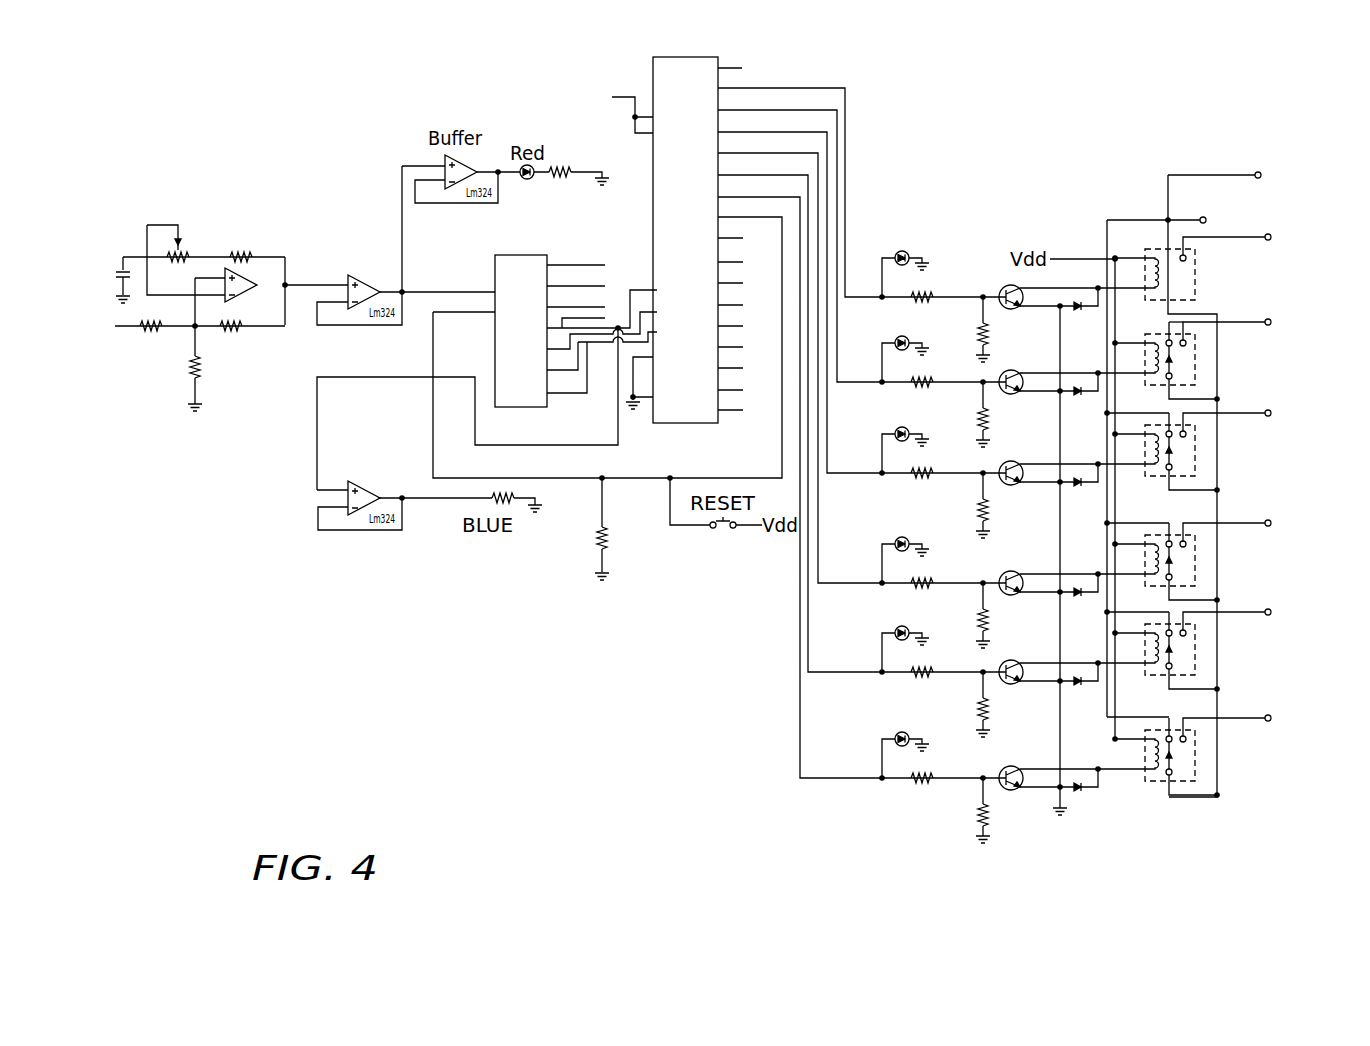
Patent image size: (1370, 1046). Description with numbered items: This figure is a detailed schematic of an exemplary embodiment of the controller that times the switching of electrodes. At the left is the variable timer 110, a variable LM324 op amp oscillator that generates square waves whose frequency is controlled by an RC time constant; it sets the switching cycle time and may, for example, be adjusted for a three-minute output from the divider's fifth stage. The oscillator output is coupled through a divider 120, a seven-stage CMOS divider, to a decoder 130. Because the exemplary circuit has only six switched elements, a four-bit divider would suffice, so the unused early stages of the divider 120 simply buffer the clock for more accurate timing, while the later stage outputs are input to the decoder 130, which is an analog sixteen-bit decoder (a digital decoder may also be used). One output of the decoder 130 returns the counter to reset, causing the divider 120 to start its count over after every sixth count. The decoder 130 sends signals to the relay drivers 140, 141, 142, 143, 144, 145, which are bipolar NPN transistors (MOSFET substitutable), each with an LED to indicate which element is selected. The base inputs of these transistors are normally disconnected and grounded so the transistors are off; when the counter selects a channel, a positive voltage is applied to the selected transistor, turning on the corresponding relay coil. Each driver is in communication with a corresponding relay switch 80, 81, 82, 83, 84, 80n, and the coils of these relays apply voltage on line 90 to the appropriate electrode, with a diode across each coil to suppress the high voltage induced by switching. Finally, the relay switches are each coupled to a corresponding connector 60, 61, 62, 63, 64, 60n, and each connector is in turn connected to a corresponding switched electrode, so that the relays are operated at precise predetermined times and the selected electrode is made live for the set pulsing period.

The variable timer 110 is at (233, 232).
The divider 120 is at (547, 254).
The decoder 130 is at (690, 42).
The relay driver 140 is at (993, 255).
The relay driver 141 is at (1014, 355).
The relay driver 142 is at (1014, 446).
The relay driver 143 is at (1014, 555).
The relay driver 144 is at (1014, 647).
The relay driver 145 is at (1019, 753).
The line 90 is at (1203, 172).
The relay switch 80 is at (1155, 304).
The relay switch 81 is at (1155, 391).
The relay switch 82 is at (1155, 483).
The relay switch 83 is at (1155, 590).
The relay switch 84 is at (1155, 683).
The relay switch 80n is at (1157, 789).
The connector 60 is at (1276, 237).
The connector 61 is at (1276, 322).
The connector 62 is at (1276, 413).
The connector 63 is at (1276, 523).
The connector 64 is at (1276, 612).
The connector 60n is at (1276, 718).